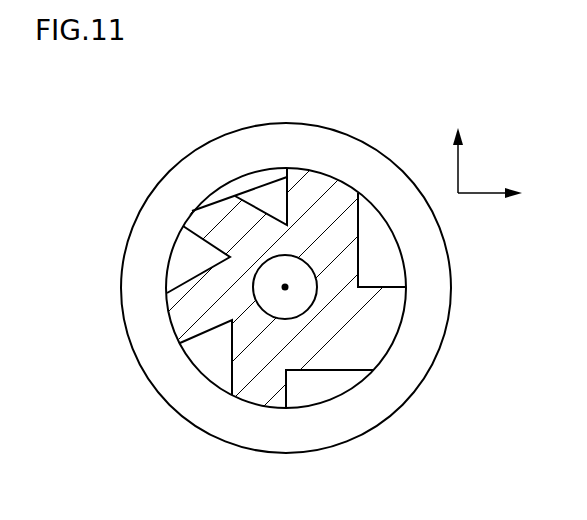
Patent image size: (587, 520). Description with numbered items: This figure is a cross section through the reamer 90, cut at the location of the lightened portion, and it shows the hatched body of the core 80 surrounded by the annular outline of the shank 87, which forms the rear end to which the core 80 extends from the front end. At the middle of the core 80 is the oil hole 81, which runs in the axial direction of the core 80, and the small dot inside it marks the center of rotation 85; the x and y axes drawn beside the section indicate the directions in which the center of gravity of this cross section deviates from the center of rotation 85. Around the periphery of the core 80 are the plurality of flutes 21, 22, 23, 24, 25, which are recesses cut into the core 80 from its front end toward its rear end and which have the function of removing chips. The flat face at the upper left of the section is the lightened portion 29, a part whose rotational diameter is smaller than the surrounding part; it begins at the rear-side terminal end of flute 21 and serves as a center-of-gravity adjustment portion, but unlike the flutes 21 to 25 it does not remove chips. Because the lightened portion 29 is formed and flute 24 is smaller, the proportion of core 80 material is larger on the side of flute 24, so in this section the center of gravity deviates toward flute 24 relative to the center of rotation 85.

The flute 21 is at (285, 222).
The flute 22 is at (228, 257).
The flute 23 is at (232, 328).
The flute 24 is at (296, 373).
The flute 25 is at (362, 284).
The lightened portion 29 is at (222, 198).
The core 80 is at (332, 343).
The oil hole 81 is at (300, 288).
The center of rotation 85 is at (283, 291).
The shank 87 is at (373, 148).
The reamer 90 is at (448, 110).